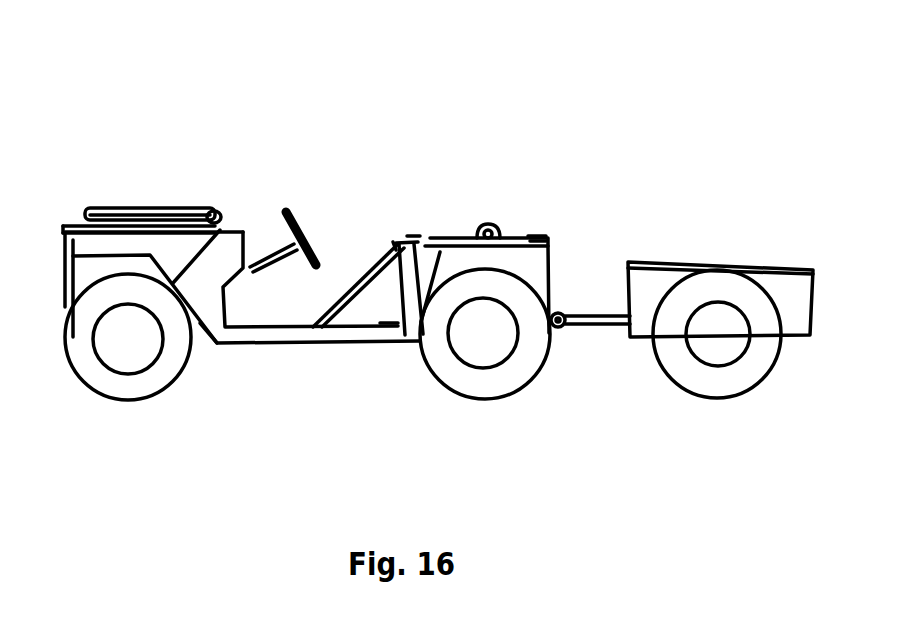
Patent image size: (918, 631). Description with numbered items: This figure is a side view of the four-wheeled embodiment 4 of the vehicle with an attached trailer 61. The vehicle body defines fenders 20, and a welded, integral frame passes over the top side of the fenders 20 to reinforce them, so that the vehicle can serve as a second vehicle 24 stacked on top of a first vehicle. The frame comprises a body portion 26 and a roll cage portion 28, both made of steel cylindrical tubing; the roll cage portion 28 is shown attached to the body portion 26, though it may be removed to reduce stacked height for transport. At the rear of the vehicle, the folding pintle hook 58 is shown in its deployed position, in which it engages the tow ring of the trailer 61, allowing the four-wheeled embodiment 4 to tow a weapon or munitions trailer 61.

The fenders 20 is at (76, 232).
The roll cage portion 28 is at (147, 212).
The body portion 26 is at (220, 212).
The four-wheeled embodiment 4 is at (467, 240).
The second vehicle 24 is at (533, 237).
The pintle hook 58 is at (560, 307).
The trailer 61 is at (748, 263).